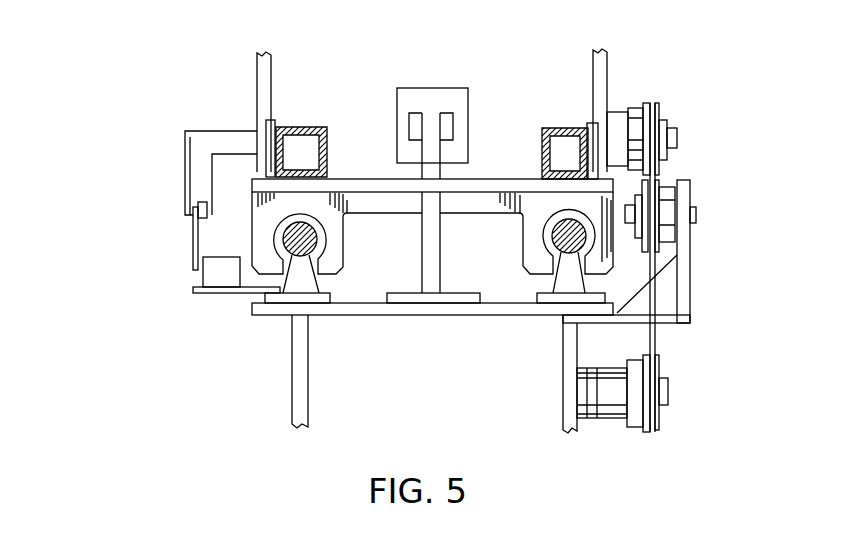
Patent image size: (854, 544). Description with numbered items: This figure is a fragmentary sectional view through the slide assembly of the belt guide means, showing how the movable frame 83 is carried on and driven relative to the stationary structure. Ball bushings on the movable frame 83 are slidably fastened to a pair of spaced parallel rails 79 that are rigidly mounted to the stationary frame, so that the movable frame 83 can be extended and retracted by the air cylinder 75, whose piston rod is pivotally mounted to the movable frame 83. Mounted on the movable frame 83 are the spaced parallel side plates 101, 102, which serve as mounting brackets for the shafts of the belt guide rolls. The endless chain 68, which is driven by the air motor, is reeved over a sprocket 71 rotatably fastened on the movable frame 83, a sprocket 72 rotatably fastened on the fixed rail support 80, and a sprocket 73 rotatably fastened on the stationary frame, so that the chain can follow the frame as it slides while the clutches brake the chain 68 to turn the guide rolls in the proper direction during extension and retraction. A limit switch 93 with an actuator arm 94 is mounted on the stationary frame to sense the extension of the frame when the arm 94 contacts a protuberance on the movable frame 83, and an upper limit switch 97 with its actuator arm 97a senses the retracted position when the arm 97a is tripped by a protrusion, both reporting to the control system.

The endless chain 68 is at (655, 337).
The sprocket 71 is at (655, 104).
The sprocket 72 is at (656, 263).
The sprocket 73 is at (663, 418).
The air cylinder 75 is at (468, 102).
The rails 79 is at (279, 233).
The rail support 80 is at (538, 315).
The movable frame 83 is at (373, 213).
The limit switch 93 is at (203, 277).
The actuator arm 94 is at (193, 238).
The upper limit switch 97 is at (236, 290).
The actuator arm 97a is at (202, 210).
The side plate 101 is at (257, 68).
The side plate 102 is at (602, 68).